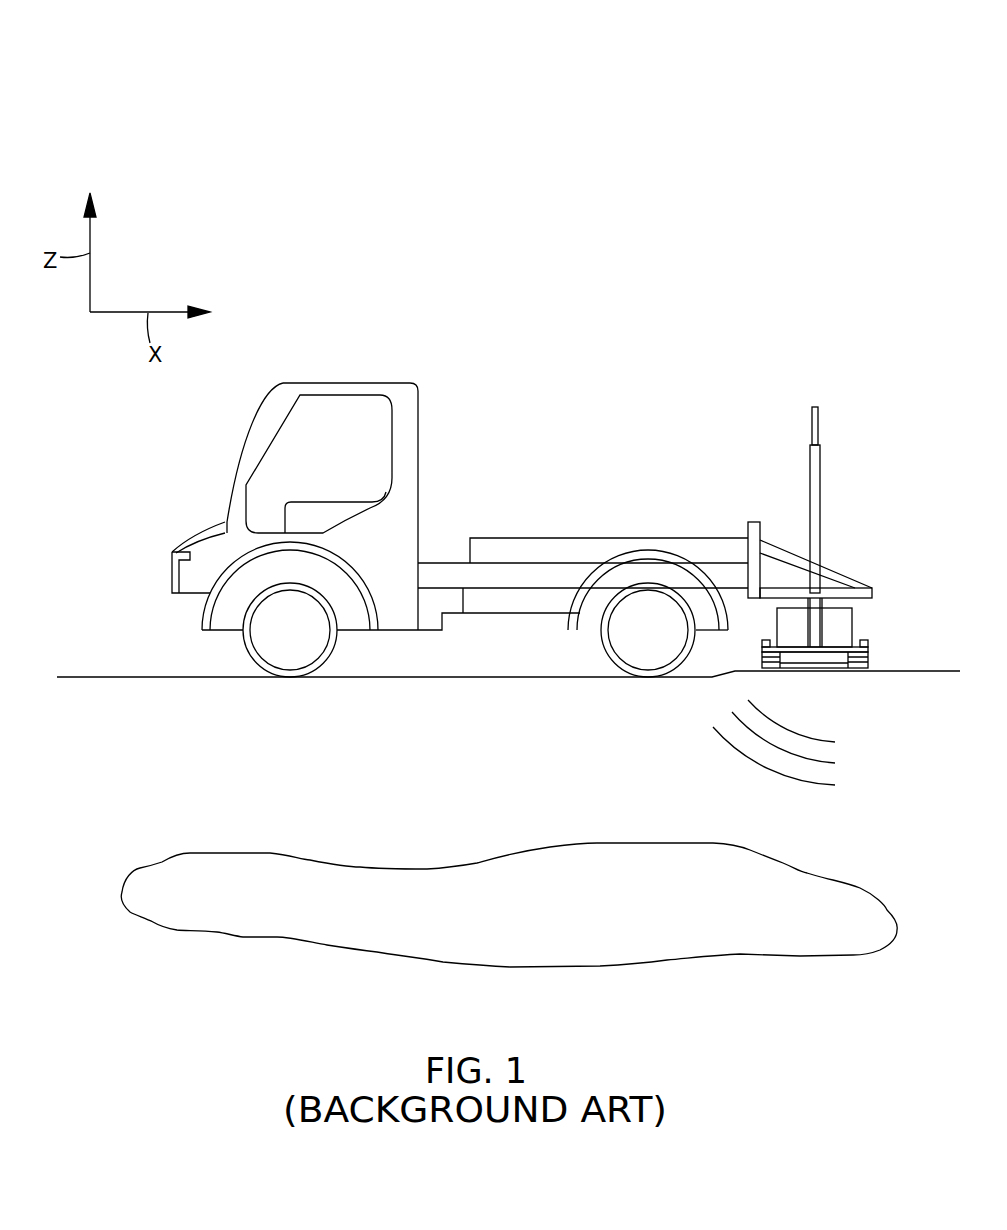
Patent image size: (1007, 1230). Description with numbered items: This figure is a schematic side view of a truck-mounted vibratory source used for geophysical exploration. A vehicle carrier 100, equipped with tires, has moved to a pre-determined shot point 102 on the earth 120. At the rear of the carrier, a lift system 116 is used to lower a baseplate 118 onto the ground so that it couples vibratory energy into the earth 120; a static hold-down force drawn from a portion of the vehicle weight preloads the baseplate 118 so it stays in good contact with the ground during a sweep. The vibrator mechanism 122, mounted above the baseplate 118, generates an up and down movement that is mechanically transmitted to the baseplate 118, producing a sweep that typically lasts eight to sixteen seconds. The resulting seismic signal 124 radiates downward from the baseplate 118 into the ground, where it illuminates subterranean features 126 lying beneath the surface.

The vehicle carrier 100 is at (803, 57).
The shot point 102 is at (380, 679).
The lift system 116 is at (790, 587).
The baseplate 118 is at (822, 668).
The earth 120 is at (920, 672).
The vibrator mechanism 122 is at (853, 627).
The seismic signal 124 is at (763, 773).
The subterranean features 126 is at (535, 968).